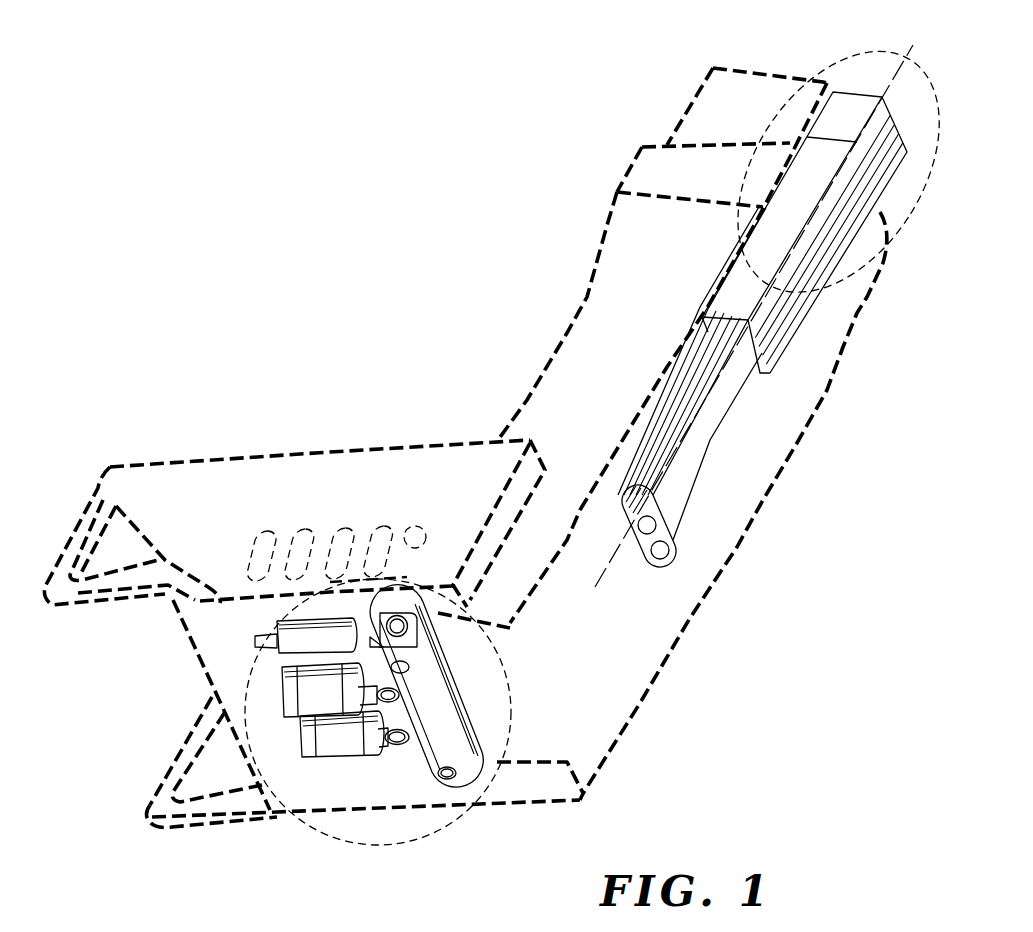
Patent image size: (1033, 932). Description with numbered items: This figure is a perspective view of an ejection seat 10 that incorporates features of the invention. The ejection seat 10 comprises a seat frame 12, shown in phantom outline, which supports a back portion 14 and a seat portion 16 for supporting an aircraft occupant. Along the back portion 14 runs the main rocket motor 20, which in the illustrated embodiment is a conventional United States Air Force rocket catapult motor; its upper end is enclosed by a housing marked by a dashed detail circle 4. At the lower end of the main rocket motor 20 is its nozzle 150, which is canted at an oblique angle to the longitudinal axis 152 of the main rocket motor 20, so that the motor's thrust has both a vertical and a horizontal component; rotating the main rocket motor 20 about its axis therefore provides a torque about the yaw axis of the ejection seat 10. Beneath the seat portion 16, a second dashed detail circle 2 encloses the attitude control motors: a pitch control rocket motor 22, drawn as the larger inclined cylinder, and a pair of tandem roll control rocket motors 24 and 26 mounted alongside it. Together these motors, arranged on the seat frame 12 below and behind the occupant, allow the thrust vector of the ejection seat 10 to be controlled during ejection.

The detail view circle of hydraulic actuator assembly 2 is at (505, 678).
The detail view circle of rail housing 4 is at (842, 63).
The ejection seat 10 is at (426, 325).
The seat frame 12 is at (78, 503).
The back portion 14 is at (580, 300).
The seat portion 16 is at (268, 470).
The main rocket motor 20 is at (754, 326).
The pitch control rocket motor 22 is at (433, 742).
The roll control rocket motor 24 is at (340, 750).
The roll control rocket motor 26 is at (292, 702).
The nozzle 150 is at (660, 550).
The longitudinal axis 152 is at (605, 570).